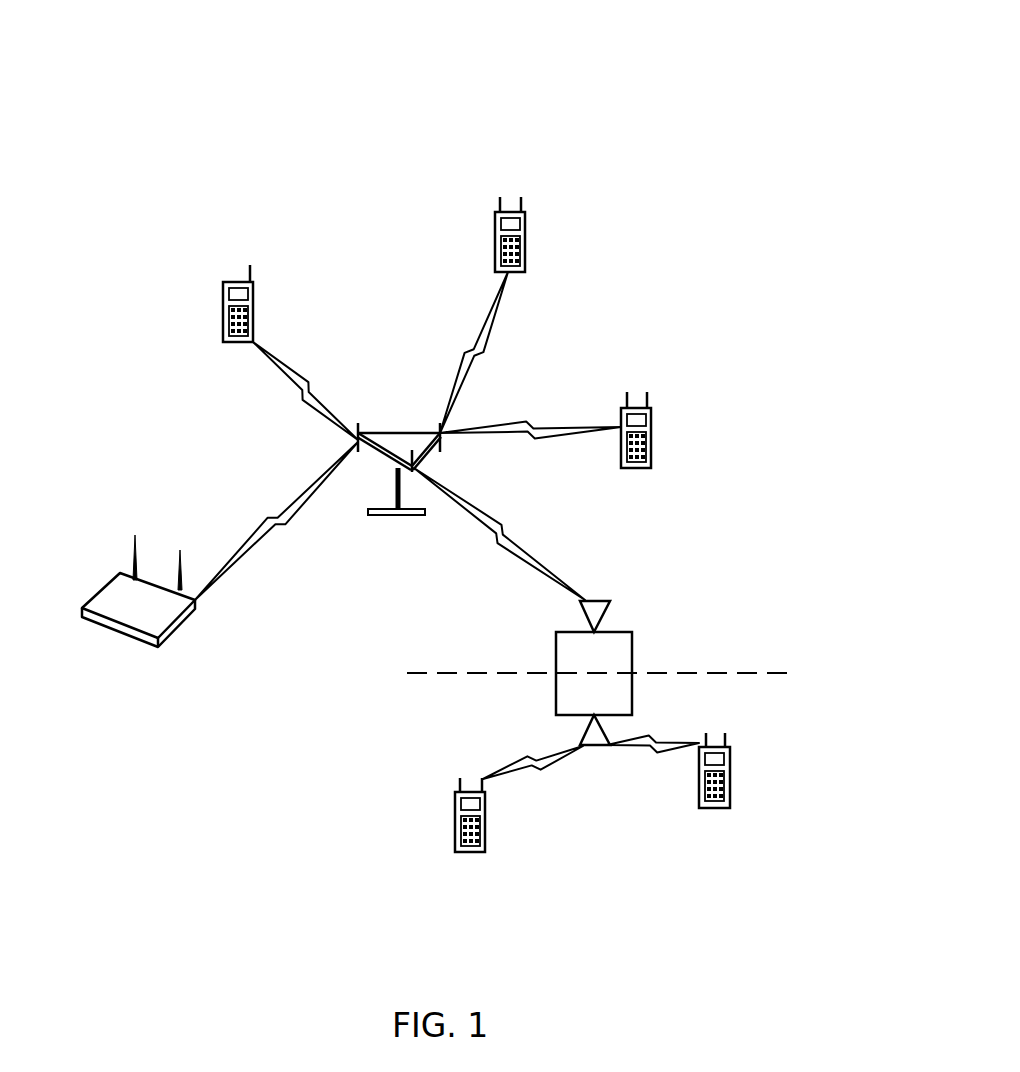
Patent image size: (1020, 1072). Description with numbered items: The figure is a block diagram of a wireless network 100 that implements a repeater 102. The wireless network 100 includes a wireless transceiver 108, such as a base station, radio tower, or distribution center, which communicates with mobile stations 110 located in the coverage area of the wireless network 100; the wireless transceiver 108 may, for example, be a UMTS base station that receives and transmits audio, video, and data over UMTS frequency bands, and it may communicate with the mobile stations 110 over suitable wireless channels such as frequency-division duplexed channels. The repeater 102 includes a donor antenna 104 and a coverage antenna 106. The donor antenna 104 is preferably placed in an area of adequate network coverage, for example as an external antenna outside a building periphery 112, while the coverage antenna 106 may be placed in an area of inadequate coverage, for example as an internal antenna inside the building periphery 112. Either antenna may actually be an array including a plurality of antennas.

The wireless network 100 is at (606, 103).
The repeater 102 is at (633, 641).
The donor antenna 104 is at (605, 598).
The coverage antenna 106 is at (590, 748).
The wireless transceiver 108 is at (382, 432).
The mobile stations 110 is at (253, 292).
The building periphery 112 is at (745, 672).